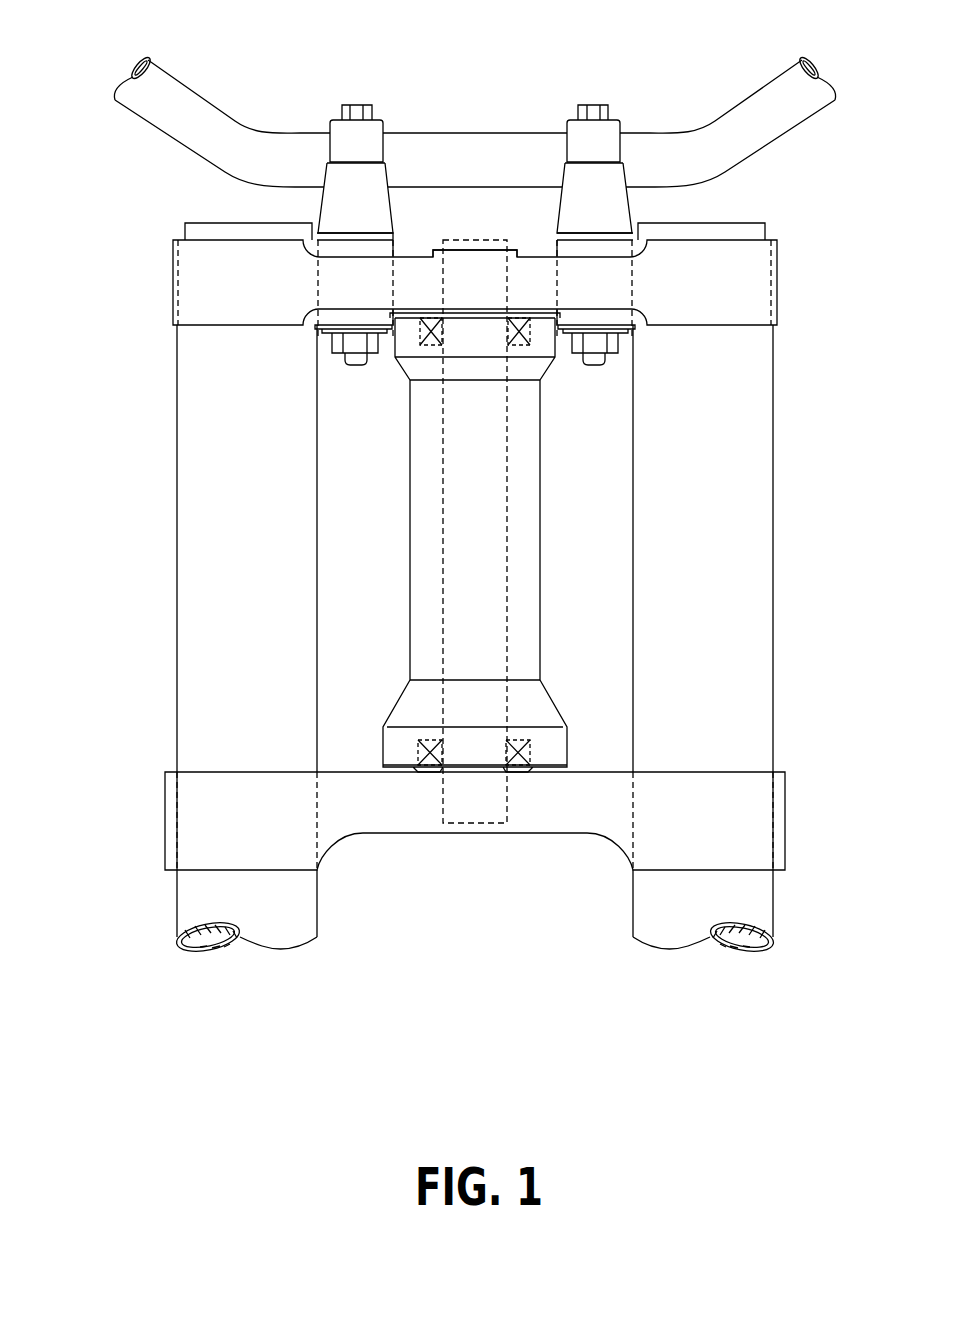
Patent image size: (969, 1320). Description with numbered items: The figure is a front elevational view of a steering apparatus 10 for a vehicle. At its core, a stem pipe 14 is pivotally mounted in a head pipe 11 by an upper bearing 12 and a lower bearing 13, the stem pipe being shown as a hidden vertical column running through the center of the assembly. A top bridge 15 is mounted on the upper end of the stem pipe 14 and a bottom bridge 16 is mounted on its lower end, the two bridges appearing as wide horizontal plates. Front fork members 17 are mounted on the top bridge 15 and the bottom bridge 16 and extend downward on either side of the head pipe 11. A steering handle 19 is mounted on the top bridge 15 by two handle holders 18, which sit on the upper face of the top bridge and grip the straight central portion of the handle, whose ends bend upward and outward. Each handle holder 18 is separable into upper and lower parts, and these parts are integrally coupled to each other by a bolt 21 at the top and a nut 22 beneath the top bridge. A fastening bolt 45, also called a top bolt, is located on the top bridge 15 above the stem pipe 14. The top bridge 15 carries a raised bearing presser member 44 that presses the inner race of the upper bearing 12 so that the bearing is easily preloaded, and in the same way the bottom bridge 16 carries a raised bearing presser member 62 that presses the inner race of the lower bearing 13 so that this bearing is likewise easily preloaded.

The steering apparatus 10 is at (471, 950).
The head pipe 11 is at (541, 533).
The upper bearing 12 is at (516, 346).
The lower bearing 13 is at (515, 743).
The stem pipe 14 is at (442, 525).
The top bridge 15 is at (747, 280).
The bottom bridge 16 is at (745, 822).
The front fork members 17 is at (192, 553).
The handle holders 18 is at (385, 124).
The steering handle 19 is at (192, 88).
The bolt 21 is at (355, 103).
The nut 22 is at (337, 354).
The bearing presser member 44 is at (433, 326).
The fastening bolt 45 is at (472, 250).
The bearing presser member 62 is at (432, 750).